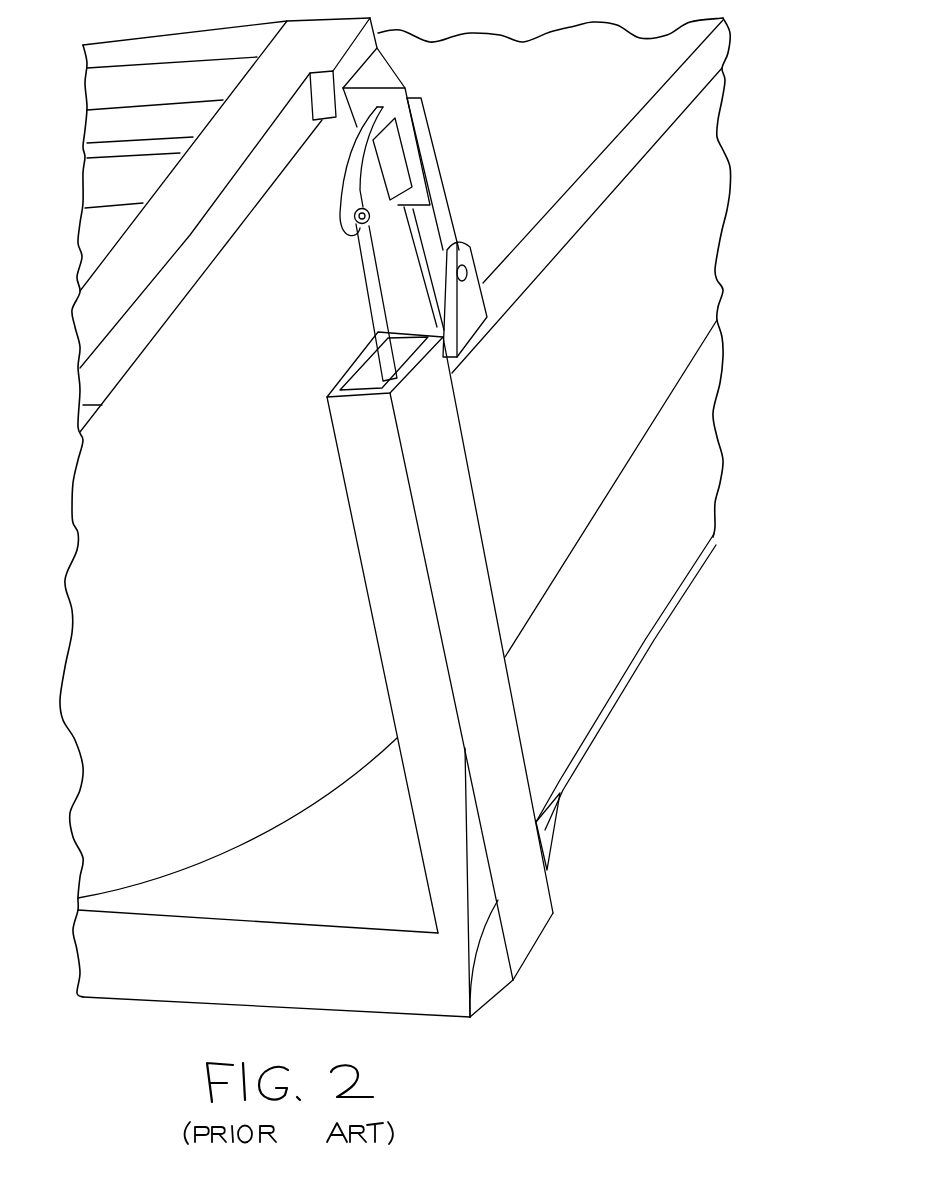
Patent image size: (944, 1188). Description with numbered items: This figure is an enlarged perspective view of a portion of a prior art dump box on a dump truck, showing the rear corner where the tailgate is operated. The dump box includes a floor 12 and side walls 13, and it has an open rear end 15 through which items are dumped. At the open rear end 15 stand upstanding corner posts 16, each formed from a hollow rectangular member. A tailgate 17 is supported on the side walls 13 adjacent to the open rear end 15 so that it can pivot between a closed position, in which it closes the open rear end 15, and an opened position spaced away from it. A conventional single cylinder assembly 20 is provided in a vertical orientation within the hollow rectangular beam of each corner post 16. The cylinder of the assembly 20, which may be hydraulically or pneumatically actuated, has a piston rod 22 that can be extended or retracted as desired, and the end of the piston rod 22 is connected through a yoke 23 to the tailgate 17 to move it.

The floor 12 is at (222, 741).
The side walls 13 is at (620, 411).
The open rear end 15 is at (318, 968).
The corner posts 16 is at (520, 872).
The tailgate 17 is at (187, 177).
The single cylinder assembly 20 is at (350, 292).
The piston rod 22 is at (380, 313).
The yoke 23 is at (367, 183).